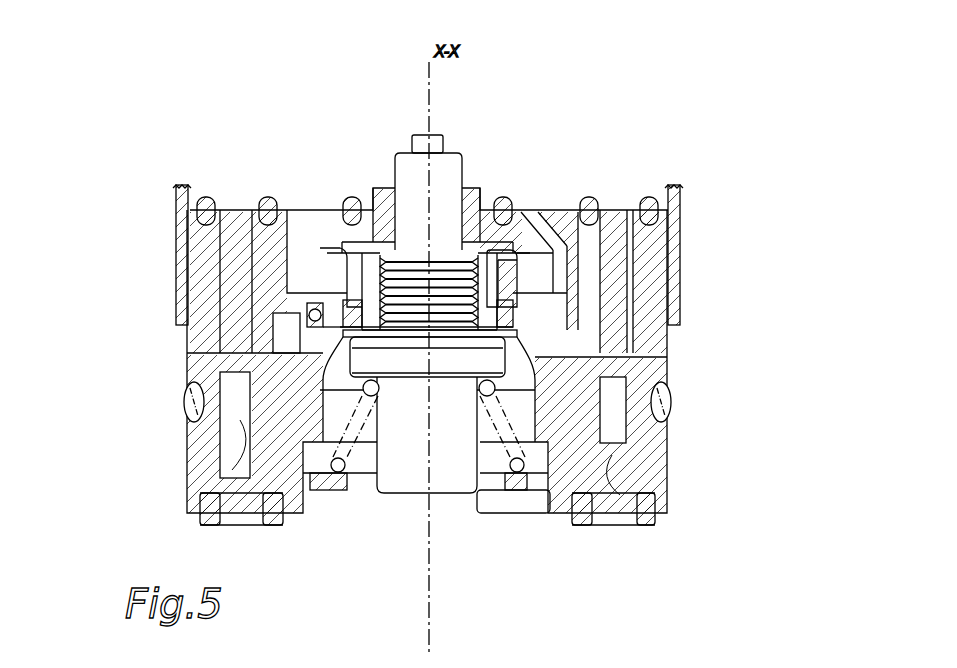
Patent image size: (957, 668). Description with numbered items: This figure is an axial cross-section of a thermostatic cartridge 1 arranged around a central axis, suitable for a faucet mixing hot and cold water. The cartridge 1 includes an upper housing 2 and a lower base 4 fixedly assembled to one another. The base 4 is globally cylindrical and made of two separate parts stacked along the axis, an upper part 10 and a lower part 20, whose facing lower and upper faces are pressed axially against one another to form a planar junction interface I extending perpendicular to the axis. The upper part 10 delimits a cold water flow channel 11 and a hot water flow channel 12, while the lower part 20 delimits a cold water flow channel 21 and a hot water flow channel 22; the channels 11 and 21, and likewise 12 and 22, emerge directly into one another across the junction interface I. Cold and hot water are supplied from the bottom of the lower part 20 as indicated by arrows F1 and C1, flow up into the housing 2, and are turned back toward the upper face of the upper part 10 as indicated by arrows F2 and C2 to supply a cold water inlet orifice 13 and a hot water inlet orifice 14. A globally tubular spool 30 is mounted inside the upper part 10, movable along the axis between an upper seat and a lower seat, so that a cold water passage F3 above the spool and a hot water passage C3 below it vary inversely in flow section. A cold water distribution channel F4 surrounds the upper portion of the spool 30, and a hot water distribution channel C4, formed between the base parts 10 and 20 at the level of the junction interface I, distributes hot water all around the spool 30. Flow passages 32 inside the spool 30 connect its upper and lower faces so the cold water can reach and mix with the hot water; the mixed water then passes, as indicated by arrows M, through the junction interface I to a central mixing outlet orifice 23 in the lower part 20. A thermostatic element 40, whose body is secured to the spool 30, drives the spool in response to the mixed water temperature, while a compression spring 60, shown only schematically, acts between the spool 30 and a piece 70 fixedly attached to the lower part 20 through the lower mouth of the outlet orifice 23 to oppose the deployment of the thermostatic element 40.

The thermostatic cartridge 1 is at (699, 176).
The upper housing 2 is at (168, 227).
The lower base 4 is at (46, 328).
The upper part 10 is at (392, 237).
The cold water flow channel 11 is at (236, 253).
The hot water flow channel 12 is at (598, 256).
The cold water inlet orifice 13 is at (300, 265).
The hot water inlet orifice 14 is at (608, 305).
The lower part 20 is at (400, 450).
The cold water flow channel 21 is at (247, 408).
The hot water flow channel 22 is at (627, 440).
The mixing outlet orifice 23 is at (320, 487).
The spool 30 is at (608, 312).
The flow passages 32 is at (368, 262).
The thermostatic element 40 is at (470, 154).
The compression spring 60 is at (525, 413).
The piece 70 is at (534, 482).
The cold water supply arrow F1 is at (243, 514).
The cold water return arrow F2 is at (305, 208).
The cold water passage F3 is at (310, 250).
The cold water distribution channel F4 is at (320, 287).
The hot water supply arrow C1 is at (613, 519).
The hot water return arrow C2 is at (550, 208).
The hot water passage C3 is at (319, 344).
The hot water distribution channel C4 is at (570, 339).
The junction interface I is at (685, 352).
The mixed water arrows M is at (342, 352).